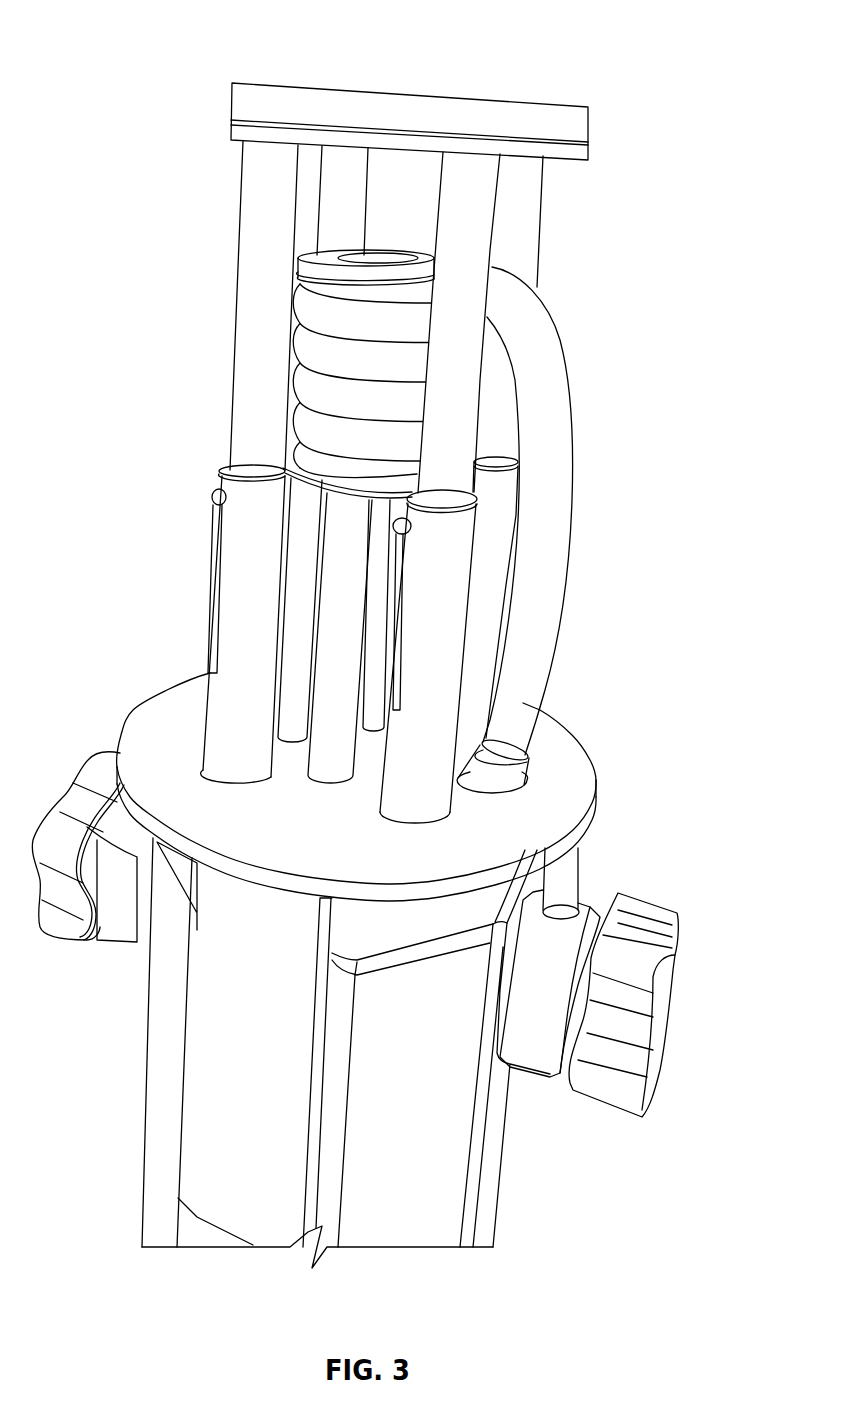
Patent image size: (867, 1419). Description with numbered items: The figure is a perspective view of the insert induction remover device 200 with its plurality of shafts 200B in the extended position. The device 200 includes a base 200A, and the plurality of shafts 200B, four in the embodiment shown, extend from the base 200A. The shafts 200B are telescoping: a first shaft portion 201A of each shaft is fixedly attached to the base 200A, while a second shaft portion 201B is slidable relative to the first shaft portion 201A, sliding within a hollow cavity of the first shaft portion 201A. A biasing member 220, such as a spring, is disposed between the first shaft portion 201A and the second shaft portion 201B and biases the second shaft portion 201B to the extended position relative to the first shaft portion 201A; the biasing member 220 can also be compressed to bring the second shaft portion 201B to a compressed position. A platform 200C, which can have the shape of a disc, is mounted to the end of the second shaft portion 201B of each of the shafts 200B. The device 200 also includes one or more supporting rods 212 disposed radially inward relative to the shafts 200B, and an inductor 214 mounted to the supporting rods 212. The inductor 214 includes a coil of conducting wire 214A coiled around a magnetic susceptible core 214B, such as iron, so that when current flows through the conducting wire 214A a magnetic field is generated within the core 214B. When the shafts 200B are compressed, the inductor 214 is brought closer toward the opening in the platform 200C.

The insert induction remover device 200 is at (572, 53).
The base 200A is at (575, 835).
The plurality of shafts 200B is at (397, 750).
The platform 200C is at (570, 153).
The first shaft portion 201A is at (447, 582).
The second shaft portion 201B is at (475, 217).
The supporting rods 212 is at (337, 625).
The inductor 214 is at (290, 457).
The coil of conducting wire 214A is at (318, 352).
The magnetic susceptible core 214B is at (296, 264).
The biasing member 220 is at (220, 549).